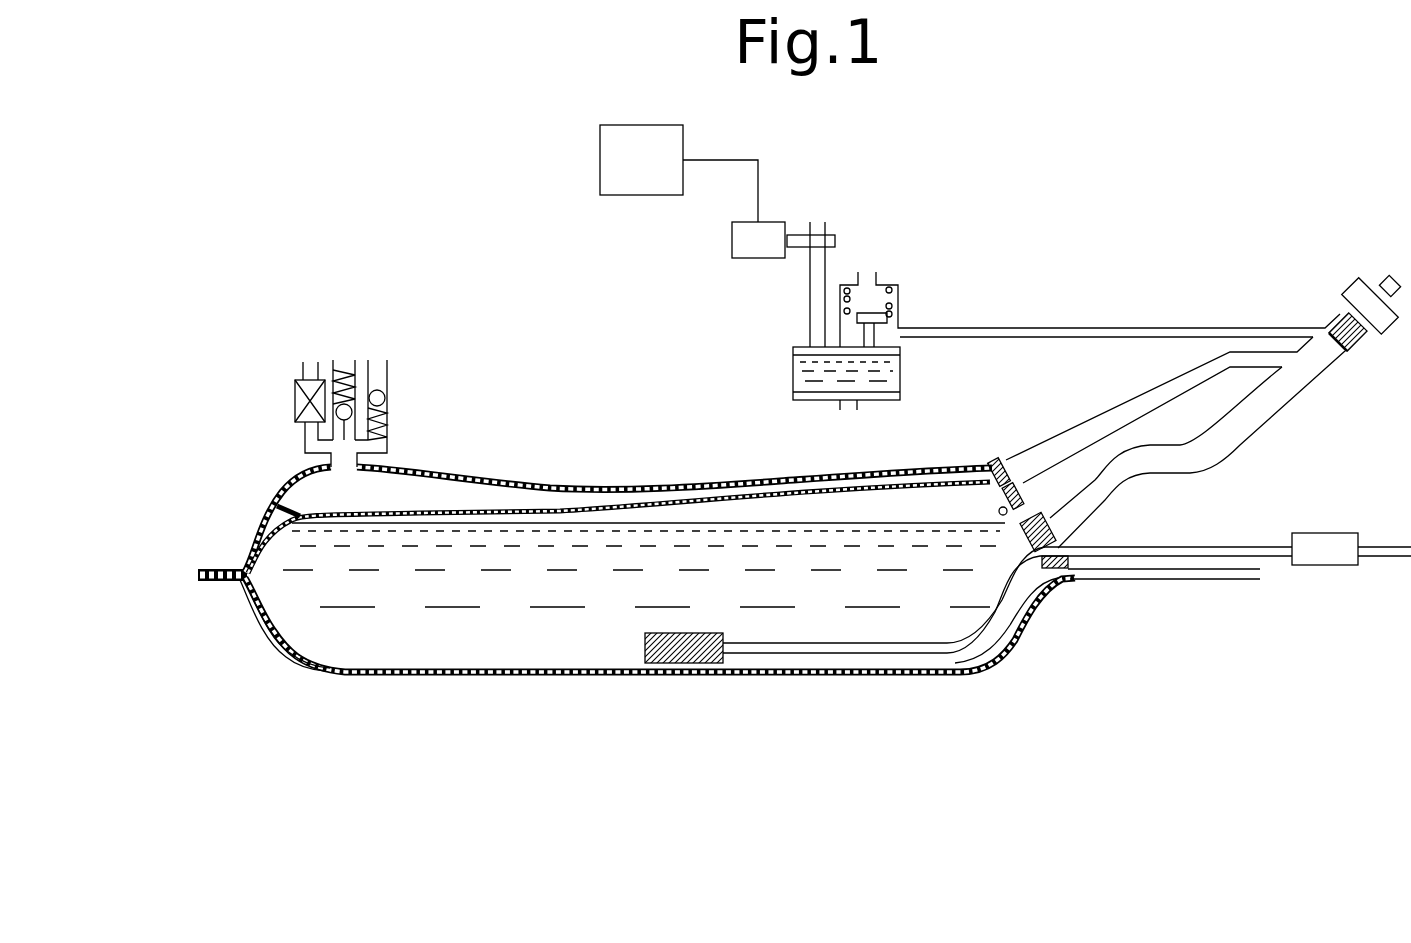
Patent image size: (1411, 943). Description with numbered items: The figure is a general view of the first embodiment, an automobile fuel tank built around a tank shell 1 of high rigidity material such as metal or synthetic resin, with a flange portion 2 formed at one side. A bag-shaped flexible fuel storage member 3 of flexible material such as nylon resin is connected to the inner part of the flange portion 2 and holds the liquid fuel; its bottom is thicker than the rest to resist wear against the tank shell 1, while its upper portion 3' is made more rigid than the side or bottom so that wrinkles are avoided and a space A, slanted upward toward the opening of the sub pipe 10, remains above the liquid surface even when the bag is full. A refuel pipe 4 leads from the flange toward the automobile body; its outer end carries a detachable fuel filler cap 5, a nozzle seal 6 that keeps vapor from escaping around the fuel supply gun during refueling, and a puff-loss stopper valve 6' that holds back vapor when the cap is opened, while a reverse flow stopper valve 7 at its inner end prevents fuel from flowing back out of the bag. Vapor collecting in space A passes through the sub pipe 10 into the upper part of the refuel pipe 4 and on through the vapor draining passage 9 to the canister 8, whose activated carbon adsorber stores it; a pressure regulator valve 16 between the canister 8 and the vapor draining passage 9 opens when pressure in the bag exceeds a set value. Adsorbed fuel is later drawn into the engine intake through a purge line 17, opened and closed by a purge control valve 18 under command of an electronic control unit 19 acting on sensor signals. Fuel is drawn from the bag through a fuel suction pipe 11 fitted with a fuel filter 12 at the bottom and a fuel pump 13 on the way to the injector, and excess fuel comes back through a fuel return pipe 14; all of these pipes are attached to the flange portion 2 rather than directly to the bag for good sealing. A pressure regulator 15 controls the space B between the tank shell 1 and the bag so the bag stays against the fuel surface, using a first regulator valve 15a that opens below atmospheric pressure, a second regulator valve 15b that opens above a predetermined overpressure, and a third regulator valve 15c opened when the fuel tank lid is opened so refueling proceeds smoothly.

The tank shell 1 is at (548, 487).
The flange portion 2 is at (1000, 460).
The flexible fuel storage member 3 is at (619, 560).
The upper portion of the flexible fuel storage member 3' is at (619, 493).
The refuel pipe 4 is at (1275, 410).
The fuel filler cap 5 is at (1354, 286).
The nozzle seal 6 is at (1359, 364).
The puff-loss stopper valve 6' is at (1346, 388).
The reverse flow stopper valve 7 is at (1020, 512).
The canister 8 is at (775, 366).
The vapor draining passage 9 is at (1110, 328).
The sub pipe 10 is at (1117, 425).
The fuel suction pipe 11 is at (1388, 558).
The fuel filter 12 is at (690, 648).
The fuel pump 13 is at (1325, 566).
The fuel return pipe 14 is at (1202, 569).
The pressure regulator 15 is at (382, 318).
The first regulator valve 15a is at (379, 394).
The second regulator valve 15b is at (343, 362).
The third regulator valve 15c is at (302, 400).
The pressure regulator valve 16 is at (880, 282).
The purge line 17 is at (822, 225).
The purge control valve 18 is at (732, 240).
The electronic control unit 19 is at (600, 162).
The space A is at (790, 515).
The space B is at (398, 490).